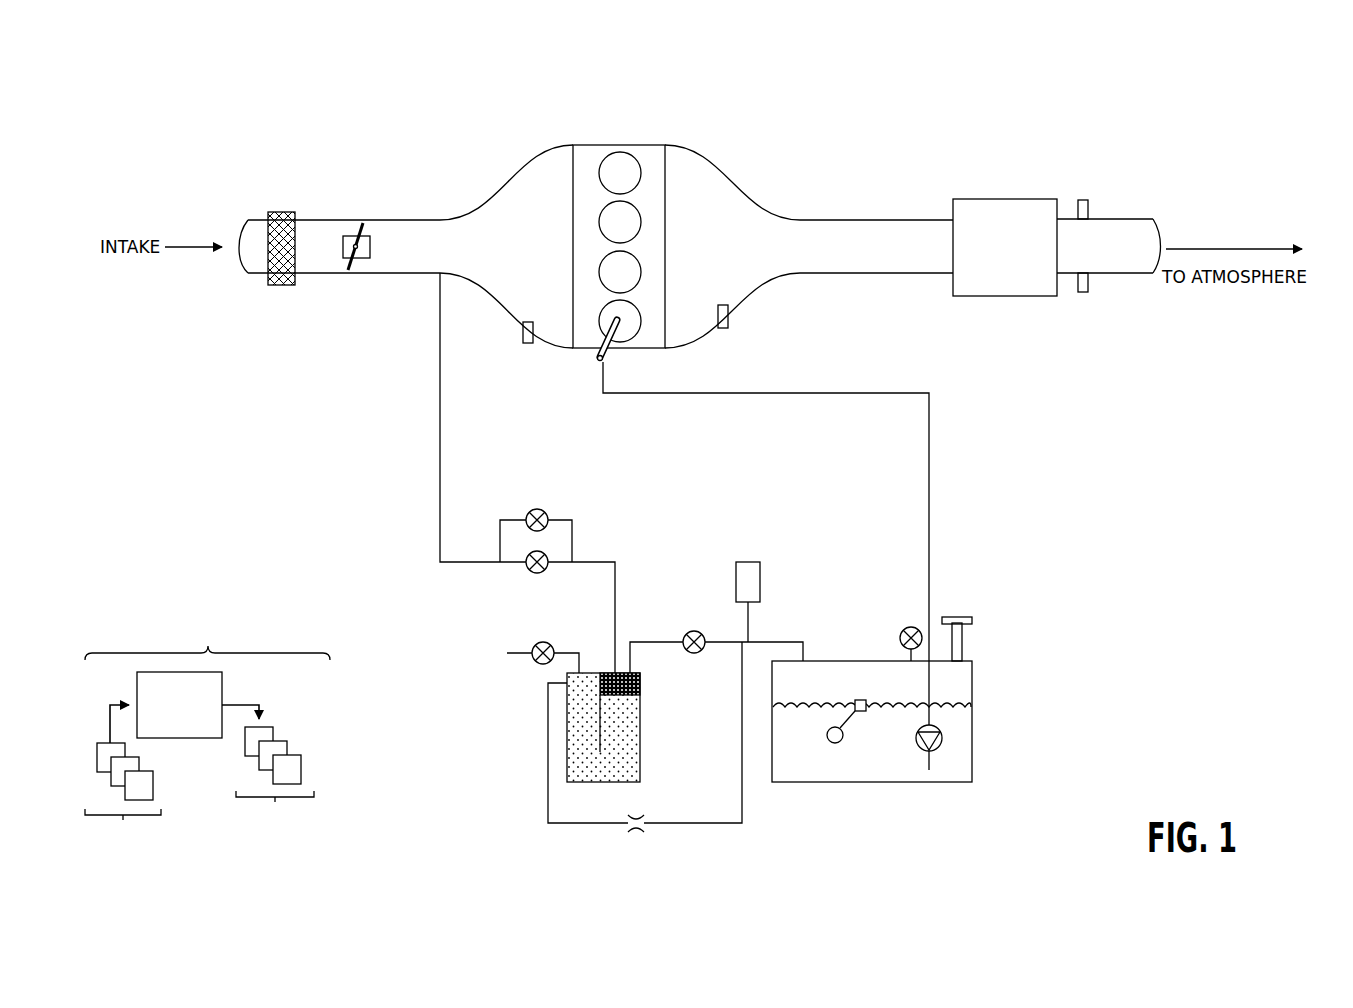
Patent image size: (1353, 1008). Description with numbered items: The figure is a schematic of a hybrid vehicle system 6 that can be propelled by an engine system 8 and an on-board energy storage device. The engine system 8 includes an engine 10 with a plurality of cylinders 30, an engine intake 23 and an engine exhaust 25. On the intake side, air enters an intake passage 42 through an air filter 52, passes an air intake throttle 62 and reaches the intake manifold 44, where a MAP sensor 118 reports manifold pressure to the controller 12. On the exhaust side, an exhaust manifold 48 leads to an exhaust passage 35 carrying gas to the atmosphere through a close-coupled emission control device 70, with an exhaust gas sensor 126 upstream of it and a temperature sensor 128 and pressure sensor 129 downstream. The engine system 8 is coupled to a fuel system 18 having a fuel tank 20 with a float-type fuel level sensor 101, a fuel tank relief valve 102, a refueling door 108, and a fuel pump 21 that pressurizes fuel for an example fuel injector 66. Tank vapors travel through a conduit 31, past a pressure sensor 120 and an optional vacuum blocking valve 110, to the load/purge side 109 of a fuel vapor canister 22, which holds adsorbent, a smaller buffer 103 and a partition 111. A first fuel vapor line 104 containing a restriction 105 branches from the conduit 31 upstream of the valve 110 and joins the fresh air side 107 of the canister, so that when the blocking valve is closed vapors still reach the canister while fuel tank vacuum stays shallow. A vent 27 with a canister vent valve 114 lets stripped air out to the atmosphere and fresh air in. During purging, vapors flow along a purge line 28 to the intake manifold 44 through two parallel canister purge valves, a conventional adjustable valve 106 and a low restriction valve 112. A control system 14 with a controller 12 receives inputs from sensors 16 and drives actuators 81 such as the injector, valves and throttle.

The hybrid vehicle system 6 is at (138, 124).
The engine system 8 is at (1188, 120).
The engine 10 is at (635, 246).
The controller 12 is at (179, 705).
The control system 14 is at (207, 731).
The sensors 16 is at (123, 783).
The fuel system 18 is at (1056, 660).
The fuel tank 20 is at (835, 661).
The fuel pump 21 is at (942, 742).
The fuel vapor canister 22 is at (626, 741).
The engine intake 23 is at (502, 172).
The engine exhaust 25 is at (775, 182).
The vent 27 is at (515, 653).
The purge line 28 is at (440, 392).
The cylinders 30 is at (638, 168).
The conduit 31 is at (762, 642).
The exhaust passage 35 is at (1130, 219).
The intake passage 42 is at (248, 275).
The intake manifold 44 is at (506, 246).
The exhaust manifold 48 is at (809, 246).
The air filter 52 is at (283, 212).
The air intake throttle 62 is at (376, 240).
The fuel injector 66 is at (612, 345).
The emission control device 70 is at (990, 199).
The actuators 81 is at (269, 774).
The fuel level sensor 101 is at (863, 701).
The fuel tank relief valve 102 is at (906, 629).
The buffer 103 is at (640, 688).
The first fuel vapor line 104 is at (686, 823).
The restriction 105 is at (638, 834).
The canister purge valve 106 is at (560, 520).
The fresh air side 107 is at (583, 720).
The refueling door 108 is at (961, 617).
The load/purge side 109 is at (620, 733).
The vacuum blocking valve 110 is at (690, 632).
The partition 111 is at (598, 738).
The canister purge valve 112 is at (530, 572).
The canister vent valve 114 is at (546, 643).
The MAP sensor 118 is at (523, 327).
The pressure sensor 120 is at (760, 572).
The exhaust gas sensor 126 is at (728, 309).
The temperature sensor 128 is at (1083, 292).
The pressure sensor 129 is at (1083, 200).